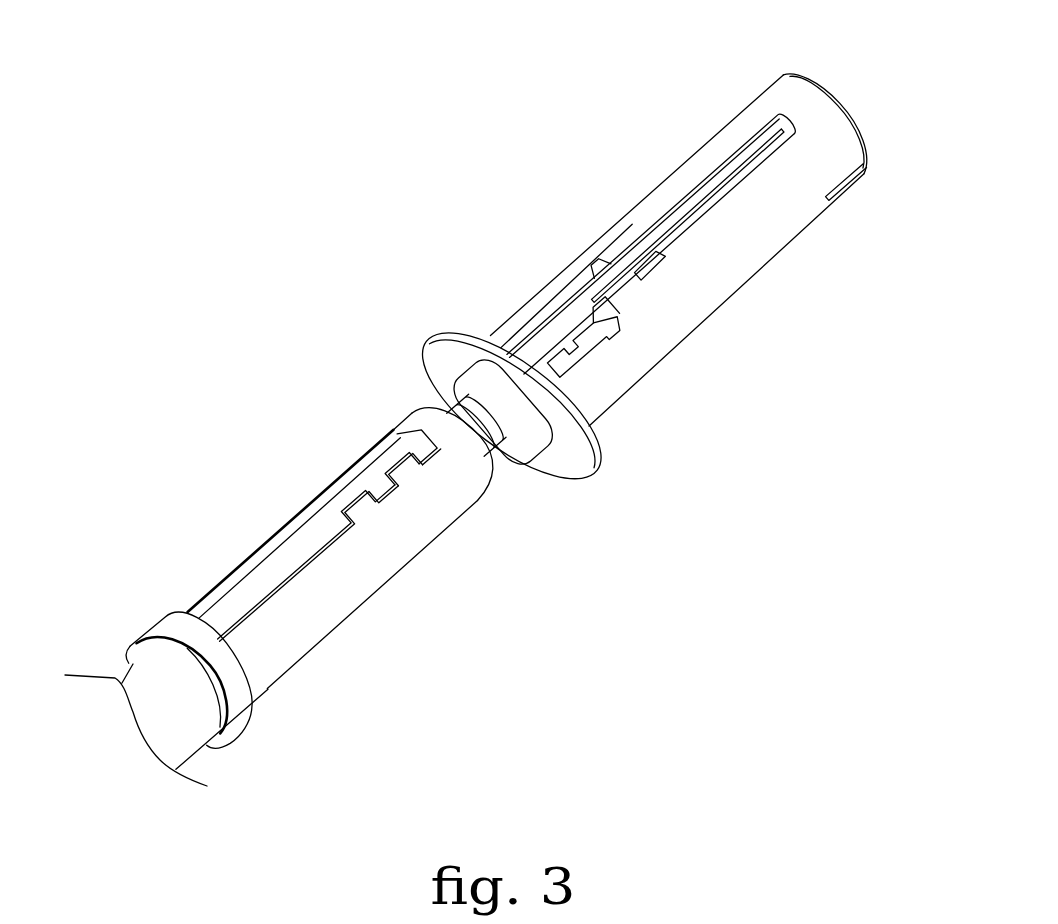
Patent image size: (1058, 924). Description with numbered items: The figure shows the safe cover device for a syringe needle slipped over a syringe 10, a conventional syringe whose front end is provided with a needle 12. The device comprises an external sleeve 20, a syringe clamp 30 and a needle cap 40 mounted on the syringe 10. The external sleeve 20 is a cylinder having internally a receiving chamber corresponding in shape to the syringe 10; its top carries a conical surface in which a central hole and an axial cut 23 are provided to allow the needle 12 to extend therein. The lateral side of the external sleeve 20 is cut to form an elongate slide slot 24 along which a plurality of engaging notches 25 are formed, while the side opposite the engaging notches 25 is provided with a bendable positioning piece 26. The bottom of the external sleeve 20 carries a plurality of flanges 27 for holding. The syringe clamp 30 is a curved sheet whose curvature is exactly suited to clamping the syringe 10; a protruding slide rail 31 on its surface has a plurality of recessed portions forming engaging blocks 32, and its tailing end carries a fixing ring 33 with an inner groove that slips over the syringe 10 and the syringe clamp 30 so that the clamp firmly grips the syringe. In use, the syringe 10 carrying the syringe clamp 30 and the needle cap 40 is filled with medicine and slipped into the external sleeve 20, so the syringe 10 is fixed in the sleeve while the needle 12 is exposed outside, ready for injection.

The syringe 10 is at (120, 675).
The needle 12 is at (520, 432).
The external sleeve 20 is at (743, 285).
The axial cut 23 is at (857, 183).
The elongate slide slot 24 is at (762, 147).
The bendable positioning piece 26 is at (545, 297).
The engaging notches 25 is at (577, 358).
The flanges 27 is at (437, 355).
The syringe clamp 30 is at (348, 582).
The protruding slide rail 31 is at (283, 560).
The engaging blocks 32 is at (393, 492).
The fixing ring 33 is at (167, 623).
The needle cap 40 is at (670, 243).